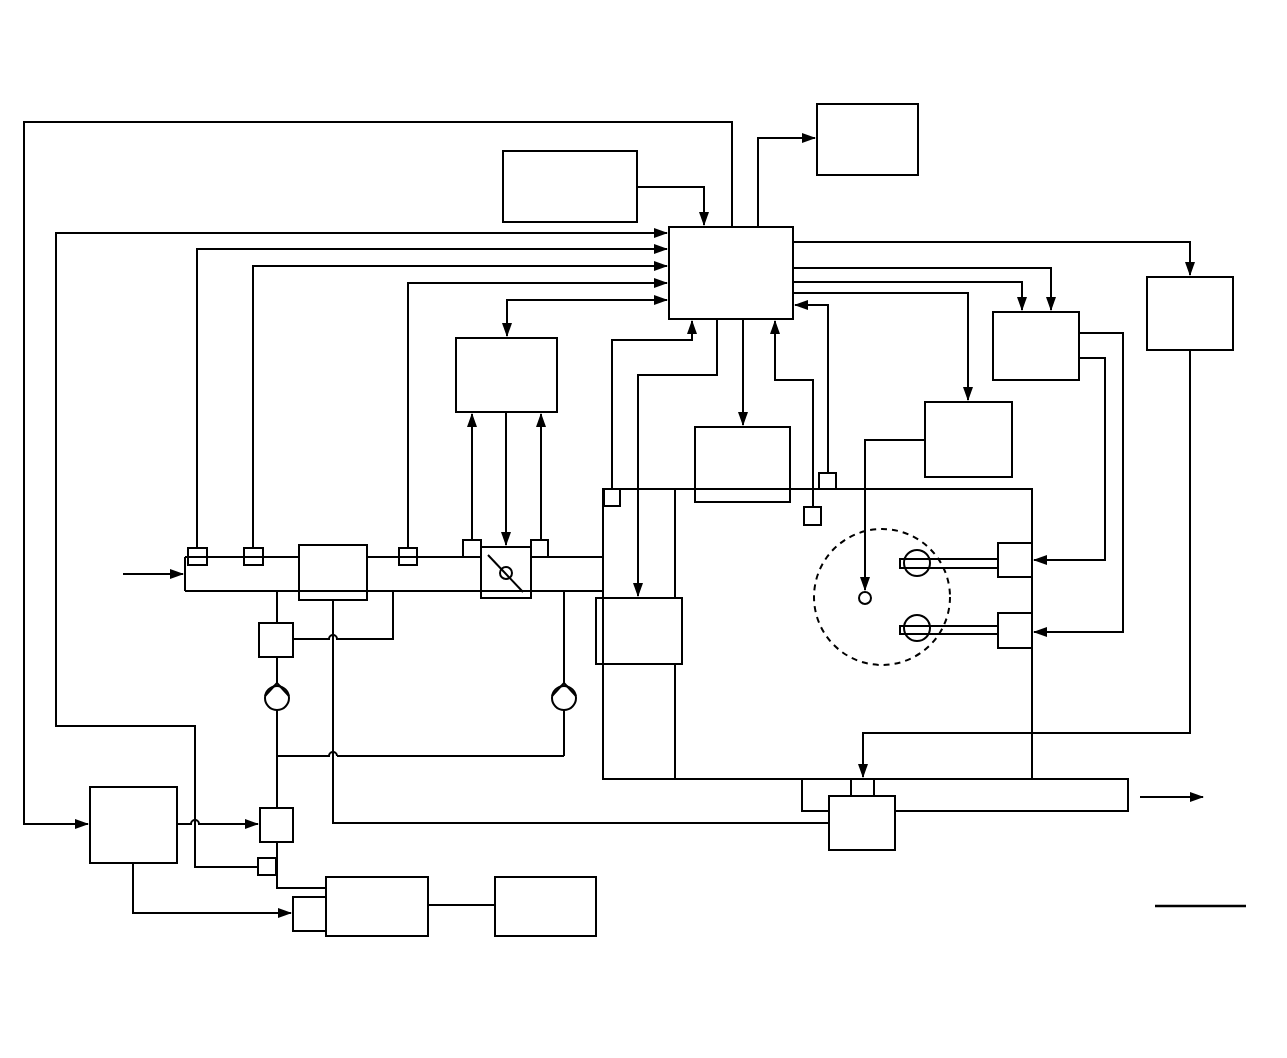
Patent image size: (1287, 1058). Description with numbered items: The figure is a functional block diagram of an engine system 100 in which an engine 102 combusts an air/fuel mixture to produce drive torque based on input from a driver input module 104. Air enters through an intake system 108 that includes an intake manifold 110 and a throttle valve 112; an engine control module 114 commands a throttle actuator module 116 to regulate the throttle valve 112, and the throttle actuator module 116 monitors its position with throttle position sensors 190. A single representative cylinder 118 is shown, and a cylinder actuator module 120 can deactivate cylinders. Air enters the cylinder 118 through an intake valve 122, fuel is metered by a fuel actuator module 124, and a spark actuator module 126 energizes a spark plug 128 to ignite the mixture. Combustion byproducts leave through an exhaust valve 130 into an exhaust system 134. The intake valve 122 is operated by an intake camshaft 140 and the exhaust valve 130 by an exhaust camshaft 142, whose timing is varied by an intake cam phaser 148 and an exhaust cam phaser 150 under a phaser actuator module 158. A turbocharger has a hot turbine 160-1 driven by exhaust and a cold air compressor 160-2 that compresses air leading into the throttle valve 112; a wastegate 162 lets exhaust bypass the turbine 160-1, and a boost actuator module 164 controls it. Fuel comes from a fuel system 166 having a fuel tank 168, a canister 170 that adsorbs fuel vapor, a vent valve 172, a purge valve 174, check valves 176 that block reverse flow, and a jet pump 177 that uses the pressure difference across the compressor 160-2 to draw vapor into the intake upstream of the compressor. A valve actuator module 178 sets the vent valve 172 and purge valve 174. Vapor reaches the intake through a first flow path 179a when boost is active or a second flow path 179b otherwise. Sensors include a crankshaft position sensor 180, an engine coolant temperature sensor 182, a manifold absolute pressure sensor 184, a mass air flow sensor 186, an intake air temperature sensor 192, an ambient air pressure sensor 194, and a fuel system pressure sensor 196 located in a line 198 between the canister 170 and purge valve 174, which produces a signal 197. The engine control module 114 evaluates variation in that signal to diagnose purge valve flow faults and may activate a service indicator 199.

The engine system 100 is at (1230, 98).
The engine 102 is at (812, 608).
The driver input module 104 is at (503, 186).
The intake system 108 is at (475, 682).
The intake manifold 110 is at (603, 772).
The throttle valve 112 is at (505, 600).
The engine control module 114 is at (793, 232).
The throttle actuator module 116 is at (481, 338).
The cylinder 118 is at (838, 660).
The cylinder actuator module 120 is at (760, 427).
The intake valve 122 is at (917, 550).
The fuel actuator module 124 is at (660, 664).
The spark actuator module 126 is at (1012, 440).
The spark plug 128 is at (858, 600).
The exhaust valve 130 is at (916, 641).
The exhaust system 134 is at (1061, 828).
The intake camshaft 140 is at (972, 559).
The exhaust camshaft 142 is at (970, 634).
The intake cam phaser 148 is at (1015, 543).
The exhaust cam phaser 150 is at (1020, 648).
The phaser actuator module 158 is at (1079, 318).
The hot turbine 160-1 is at (895, 830).
The cold air compressor 160-2 is at (327, 545).
The wastegate 162 is at (874, 786).
The boost actuator module 164 is at (1212, 350).
The fuel system 166 is at (138, 636).
The fuel tank 168 is at (596, 905).
The canister 170 is at (428, 892).
The vent valve 172 is at (293, 923).
The purge valve 174 is at (260, 815).
The check valves 176 is at (268, 705).
The jet pump 177 is at (259, 640).
The valve actuator module 178 is at (110, 863).
The first flow path 179a is at (276, 745).
The second flow path 179b is at (410, 758).
The crankshaft position sensor 180 is at (828, 473).
The engine coolant temperature sensor 182 is at (812, 525).
The manifold absolute pressure sensor 184 is at (606, 489).
The mass air flow sensor 186 is at (405, 548).
The throttle position sensors 190 is at (470, 560).
The intake air temperature sensor 192 is at (250, 548).
The ambient air pressure sensor 194 is at (195, 548).
The fuel system pressure sensor 196 is at (258, 860).
The signal 197 is at (57, 693).
The line 198 is at (302, 888).
The service indicator 199 is at (918, 140).